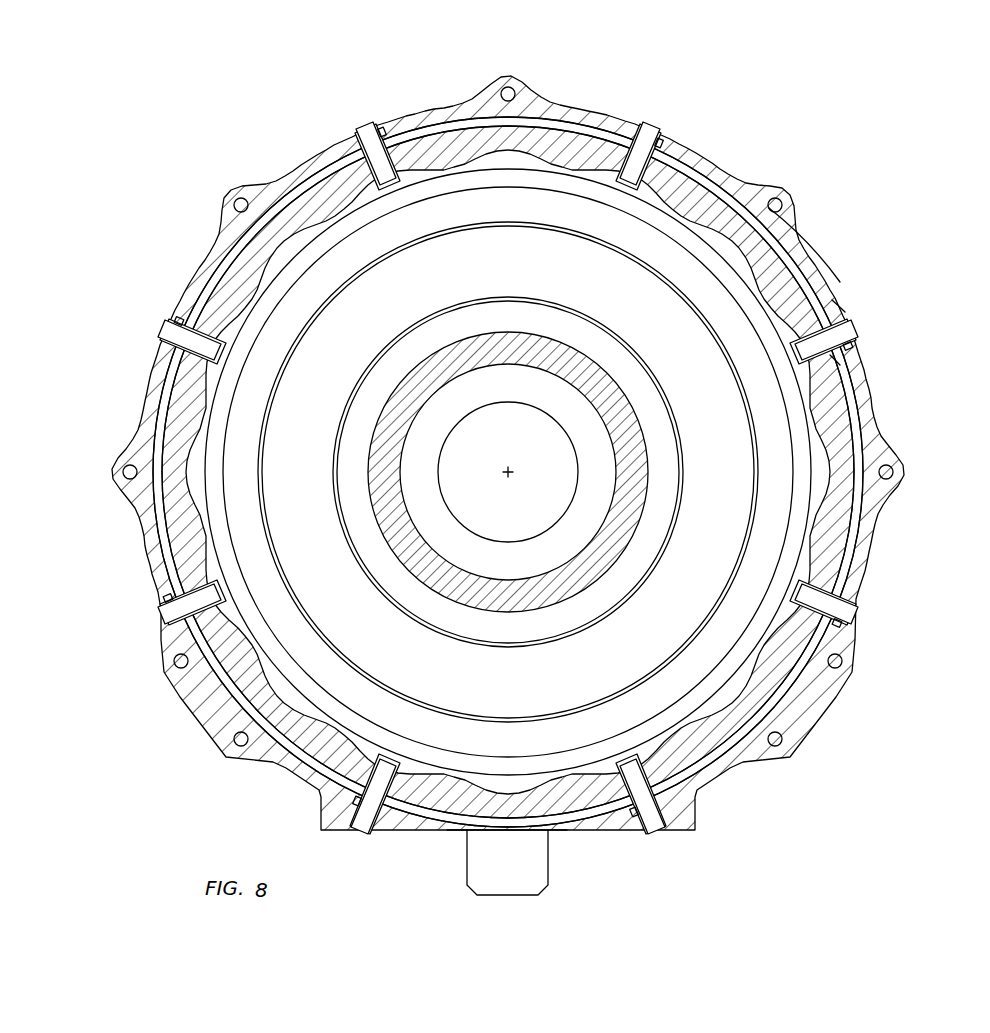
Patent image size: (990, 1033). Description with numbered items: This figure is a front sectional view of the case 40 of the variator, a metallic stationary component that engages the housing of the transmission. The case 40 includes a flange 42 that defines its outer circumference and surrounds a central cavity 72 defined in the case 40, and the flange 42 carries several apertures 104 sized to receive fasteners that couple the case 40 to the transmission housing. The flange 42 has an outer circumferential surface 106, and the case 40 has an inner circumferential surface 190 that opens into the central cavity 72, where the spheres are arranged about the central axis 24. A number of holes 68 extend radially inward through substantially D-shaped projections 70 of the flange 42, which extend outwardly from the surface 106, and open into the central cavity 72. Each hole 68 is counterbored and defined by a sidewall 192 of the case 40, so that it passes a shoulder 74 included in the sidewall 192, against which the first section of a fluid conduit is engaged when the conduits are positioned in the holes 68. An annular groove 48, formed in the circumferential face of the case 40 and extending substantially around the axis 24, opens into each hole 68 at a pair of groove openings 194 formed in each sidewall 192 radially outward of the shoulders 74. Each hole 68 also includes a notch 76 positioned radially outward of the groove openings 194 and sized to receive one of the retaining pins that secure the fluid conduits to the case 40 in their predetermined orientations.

The axis 24 is at (508, 472).
The case 40 is at (805, 295).
The flange 42 is at (737, 200).
The annular groove 48 is at (825, 275).
The holes 68 is at (365, 130).
The projections 70 is at (383, 127).
The central cavity 72 is at (590, 212).
The shoulder 74 is at (456, 148).
The notch 76 is at (393, 125).
The apertures 104 is at (512, 88).
The outer circumferential surface 106 is at (904, 520).
The inner circumferential surface 190 is at (808, 410).
The sidewall 192 is at (847, 333).
The groove openings 194 is at (842, 298).